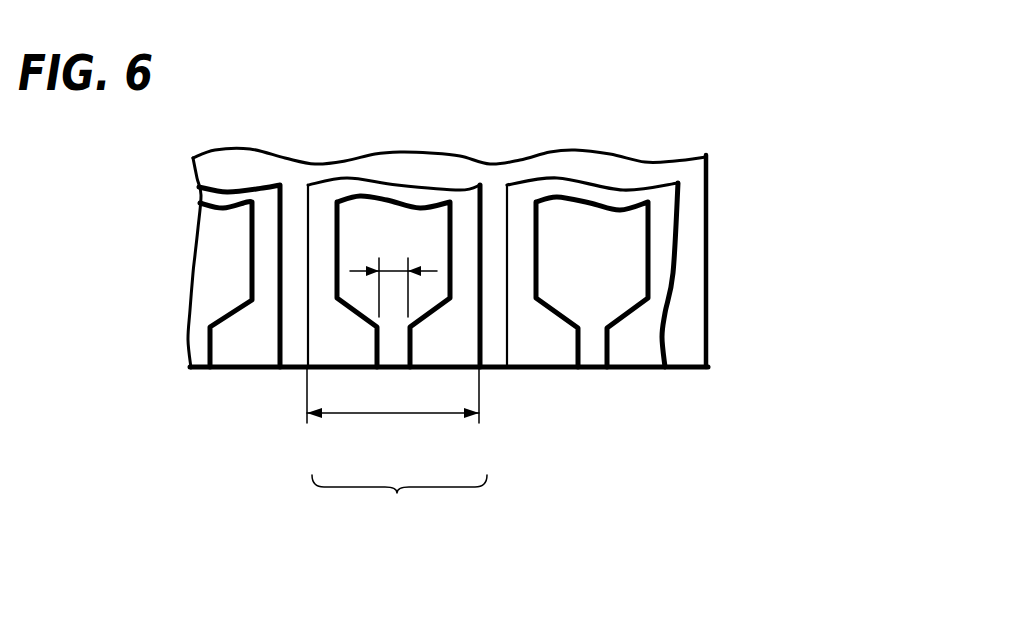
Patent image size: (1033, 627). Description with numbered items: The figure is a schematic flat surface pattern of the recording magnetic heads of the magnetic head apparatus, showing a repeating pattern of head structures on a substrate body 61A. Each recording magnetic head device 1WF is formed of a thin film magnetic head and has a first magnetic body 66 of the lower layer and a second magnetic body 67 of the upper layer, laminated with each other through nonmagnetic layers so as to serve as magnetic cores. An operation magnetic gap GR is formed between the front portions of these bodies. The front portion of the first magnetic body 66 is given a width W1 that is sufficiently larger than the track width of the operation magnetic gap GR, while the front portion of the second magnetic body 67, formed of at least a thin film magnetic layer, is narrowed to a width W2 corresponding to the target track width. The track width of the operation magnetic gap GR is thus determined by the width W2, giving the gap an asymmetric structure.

The substrate (61A/61B) 61A is at (707, 298).
The first magnetic body 66 is at (440, 333).
The second magnetic body 67 is at (362, 302).
The operation magnetic gap GR is at (592, 368).
The width of the front portion of the first magnetic body W1 is at (393, 395).
The width of the front portion of the second magnetic body W2 is at (391, 269).
The recording magnetic head device 1WF is at (399, 520).